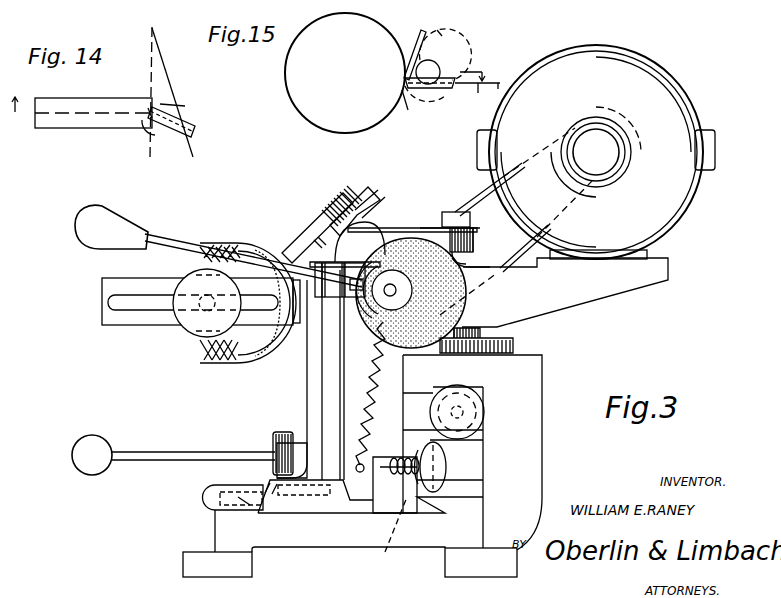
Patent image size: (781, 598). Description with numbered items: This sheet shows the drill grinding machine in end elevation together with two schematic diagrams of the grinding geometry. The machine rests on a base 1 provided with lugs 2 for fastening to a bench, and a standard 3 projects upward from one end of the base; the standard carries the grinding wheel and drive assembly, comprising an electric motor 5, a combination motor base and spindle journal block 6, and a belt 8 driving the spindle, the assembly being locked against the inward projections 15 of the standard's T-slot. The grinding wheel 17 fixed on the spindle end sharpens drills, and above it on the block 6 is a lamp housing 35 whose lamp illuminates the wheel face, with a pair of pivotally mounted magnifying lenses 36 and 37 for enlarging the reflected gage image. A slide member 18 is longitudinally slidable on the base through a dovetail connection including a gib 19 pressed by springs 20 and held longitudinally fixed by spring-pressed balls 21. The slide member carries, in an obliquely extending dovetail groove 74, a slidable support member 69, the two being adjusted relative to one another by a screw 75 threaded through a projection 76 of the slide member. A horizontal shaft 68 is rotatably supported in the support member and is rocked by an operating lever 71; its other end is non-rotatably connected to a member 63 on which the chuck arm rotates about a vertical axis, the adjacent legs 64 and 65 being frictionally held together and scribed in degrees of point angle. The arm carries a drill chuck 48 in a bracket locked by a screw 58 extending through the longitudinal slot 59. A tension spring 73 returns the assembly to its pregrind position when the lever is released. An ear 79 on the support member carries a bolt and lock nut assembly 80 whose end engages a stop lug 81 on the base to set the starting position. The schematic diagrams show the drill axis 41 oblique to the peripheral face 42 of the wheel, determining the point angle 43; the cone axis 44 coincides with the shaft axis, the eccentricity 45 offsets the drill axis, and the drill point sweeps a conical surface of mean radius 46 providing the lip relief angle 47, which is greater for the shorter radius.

In FIG. 3, the base 1 is at (318, 548).
In FIG. 3, the lugs 2 is at (183, 562).
In FIG. 3, the standard 3 is at (543, 431).
In FIG. 3, the electric motor 5 is at (670, 94).
In FIG. 3, the combination motor base and spindle journal block 6 is at (575, 298).
In FIG. 3, the belt 8 is at (463, 210).
In FIG. 14, the inward projections 15 is at (190, 102).
In FIG. 14, the grinding wheel 17 is at (44, 98).
In FIG. 15, the grinding wheel 17 is at (296, 86).
In FIG. 3, the grinding wheel 17 is at (460, 312).
In FIG. 3, the slide member 18 is at (300, 505).
In FIG. 3, the gib 19 is at (262, 484).
In FIG. 3, the springs 20 is at (236, 488).
In FIG. 3, the balls 21 is at (247, 506).
In FIG. 3, the lamp housing 35 is at (365, 236).
In FIG. 3, the magnifying lens 36 is at (343, 196).
In FIG. 3, the magnifying lens 37 is at (357, 205).
In FIG. 14, the drill axis 41 is at (200, 132).
In FIG. 15, the drill axis 41 is at (470, 84).
In FIG. 14, the peripheral face of wheel 42 is at (148, 128).
In FIG. 15, the peripheral face of wheel 42 is at (396, 107).
In FIG. 14, the point angle 43 is at (160, 135).
In FIG. 14, the cone axis 44 is at (162, 78).
In FIG. 15, the eccentricity dimension line 45 is at (477, 69).
In FIG. 14, the mean radius 46 is at (185, 107).
In FIG. 15, the lip relief angle 47 is at (418, 27).
In FIG. 3, the drill chuck 48 is at (233, 367).
In FIG. 3, the screw 58 is at (186, 326).
In FIG. 3, the longitudinal slot 59 is at (138, 310).
In FIG. 3, the member 63 is at (300, 369).
In FIG. 3, the leg 64 is at (278, 443).
In FIG. 3, the leg 65 is at (273, 452).
In FIG. 3, the shaft 68 is at (398, 292).
In FIG. 3, the slidable support member 69 is at (330, 383).
In FIG. 3, the operating lever 71 is at (130, 225).
In FIG. 3, the tension spring 73 is at (368, 383).
In FIG. 3, the dovetail groove 74 is at (387, 533).
In FIG. 3, the screw 75 is at (447, 465).
In FIG. 3, the projection 76 is at (396, 485).
In FIG. 3, the ear 79 is at (416, 402).
In FIG. 3, the bolt and lock nut assembly 80 is at (477, 405).
In FIG. 3, the stop lug 81 is at (473, 443).